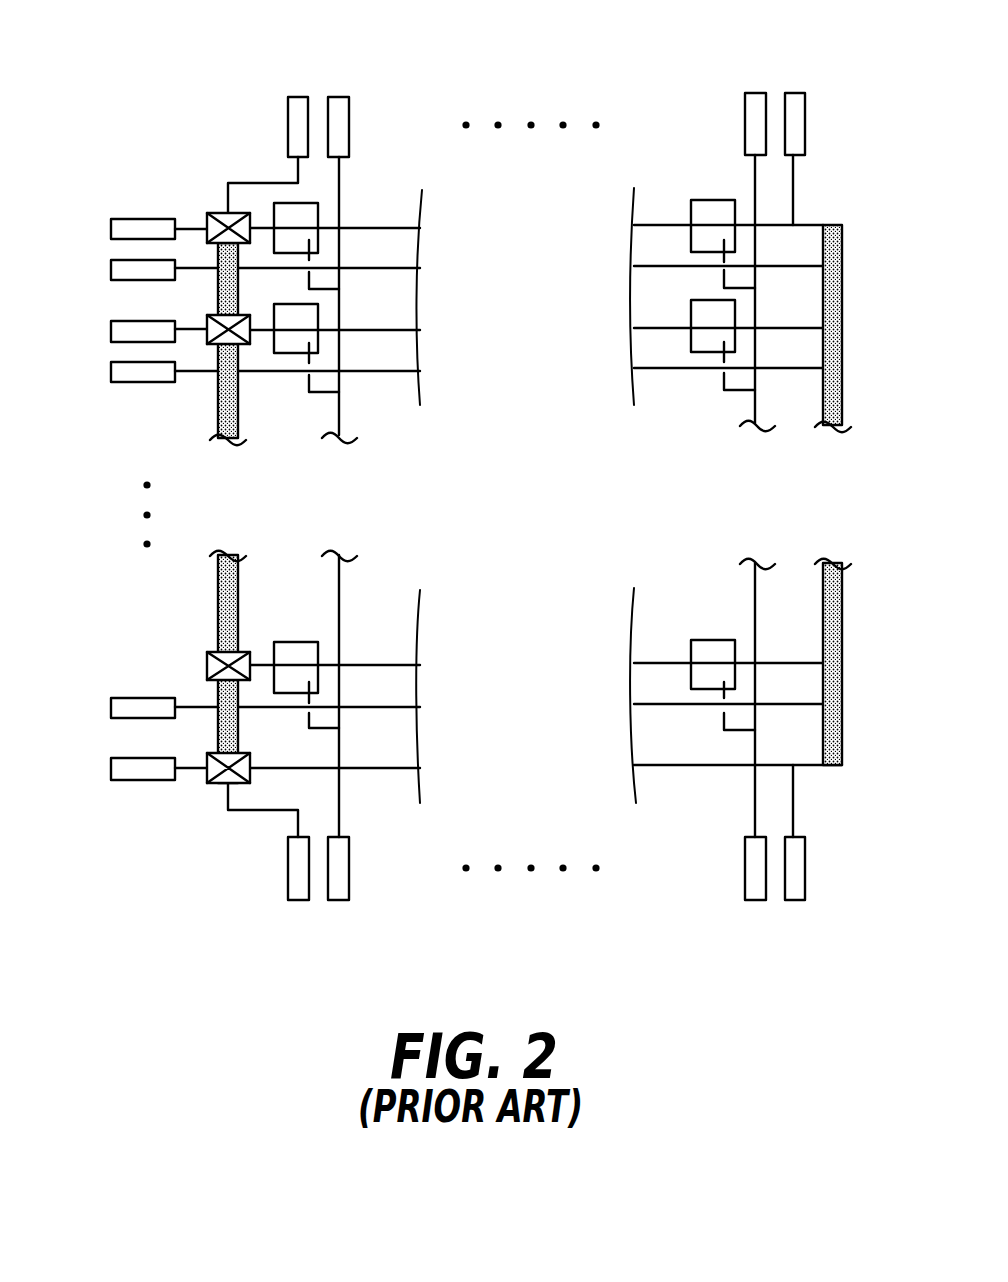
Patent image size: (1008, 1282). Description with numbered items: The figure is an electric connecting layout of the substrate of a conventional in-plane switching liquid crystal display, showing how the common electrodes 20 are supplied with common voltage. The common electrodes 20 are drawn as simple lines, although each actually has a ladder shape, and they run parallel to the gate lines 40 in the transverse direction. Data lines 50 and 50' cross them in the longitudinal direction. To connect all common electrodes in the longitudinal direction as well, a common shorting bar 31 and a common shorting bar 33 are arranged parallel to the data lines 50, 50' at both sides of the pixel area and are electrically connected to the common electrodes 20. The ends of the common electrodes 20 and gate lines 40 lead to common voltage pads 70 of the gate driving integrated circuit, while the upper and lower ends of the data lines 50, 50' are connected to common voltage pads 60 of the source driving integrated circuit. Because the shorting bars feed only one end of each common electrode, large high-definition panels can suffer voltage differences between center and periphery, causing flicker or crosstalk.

The common electrode 20 is at (398, 228).
The gate line 40 is at (398, 268).
The data line 50 is at (746, 496).
The data line 50' is at (372, 494).
The common voltage pad of the source driving integrated circuit 60 is at (338, 97).
The common voltage pad of the gate driving integrated circuit 70 is at (110, 270).
The common shorting bar 31 is at (218, 410).
The common shorting bar 33 is at (843, 637).